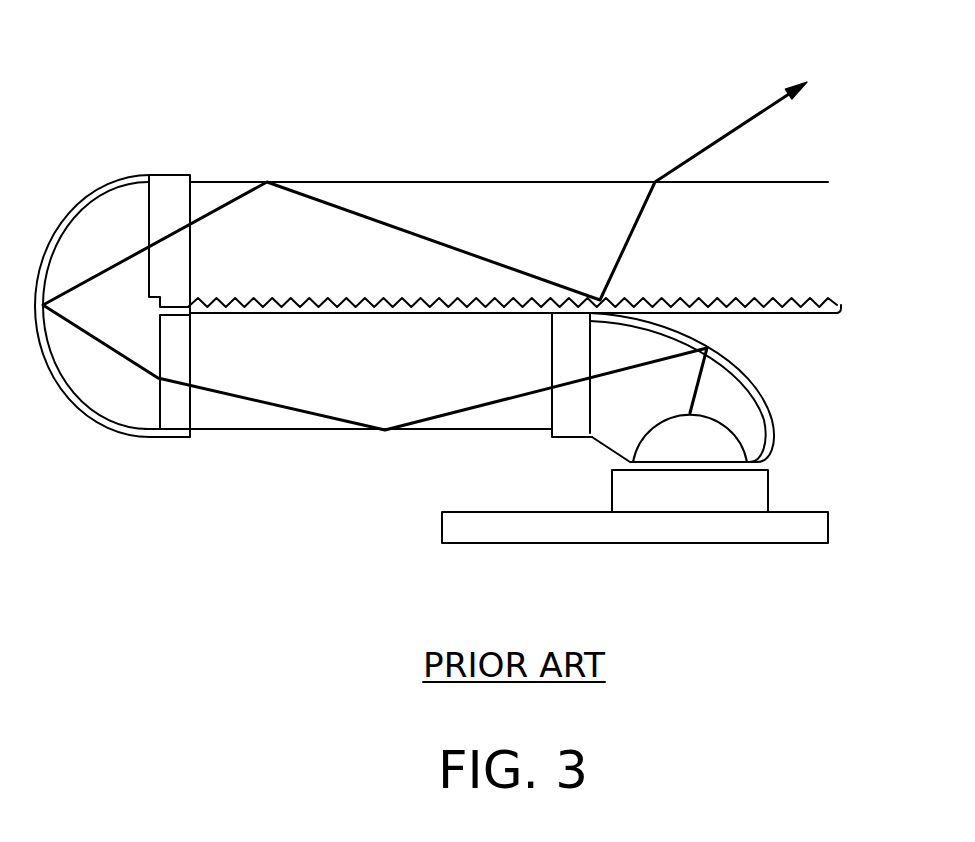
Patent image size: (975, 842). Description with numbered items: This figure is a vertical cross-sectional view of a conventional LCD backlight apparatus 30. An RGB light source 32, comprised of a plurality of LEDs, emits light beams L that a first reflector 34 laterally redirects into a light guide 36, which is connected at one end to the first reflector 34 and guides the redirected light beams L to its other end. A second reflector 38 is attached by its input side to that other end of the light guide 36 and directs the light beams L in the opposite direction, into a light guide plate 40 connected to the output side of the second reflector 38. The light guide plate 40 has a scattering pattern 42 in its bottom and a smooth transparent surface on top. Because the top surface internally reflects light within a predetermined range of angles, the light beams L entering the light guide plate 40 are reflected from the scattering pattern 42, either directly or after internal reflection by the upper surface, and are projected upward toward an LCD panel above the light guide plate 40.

The LCD backlight apparatus 30 is at (508, 50).
The RGB light source 32 is at (724, 447).
The first reflector 34 is at (755, 378).
The light guide 36 is at (325, 438).
The second reflector 38 is at (75, 400).
The light guide plate 40 is at (393, 180).
The scattering pattern 42 is at (777, 298).
The light beams L is at (688, 153).